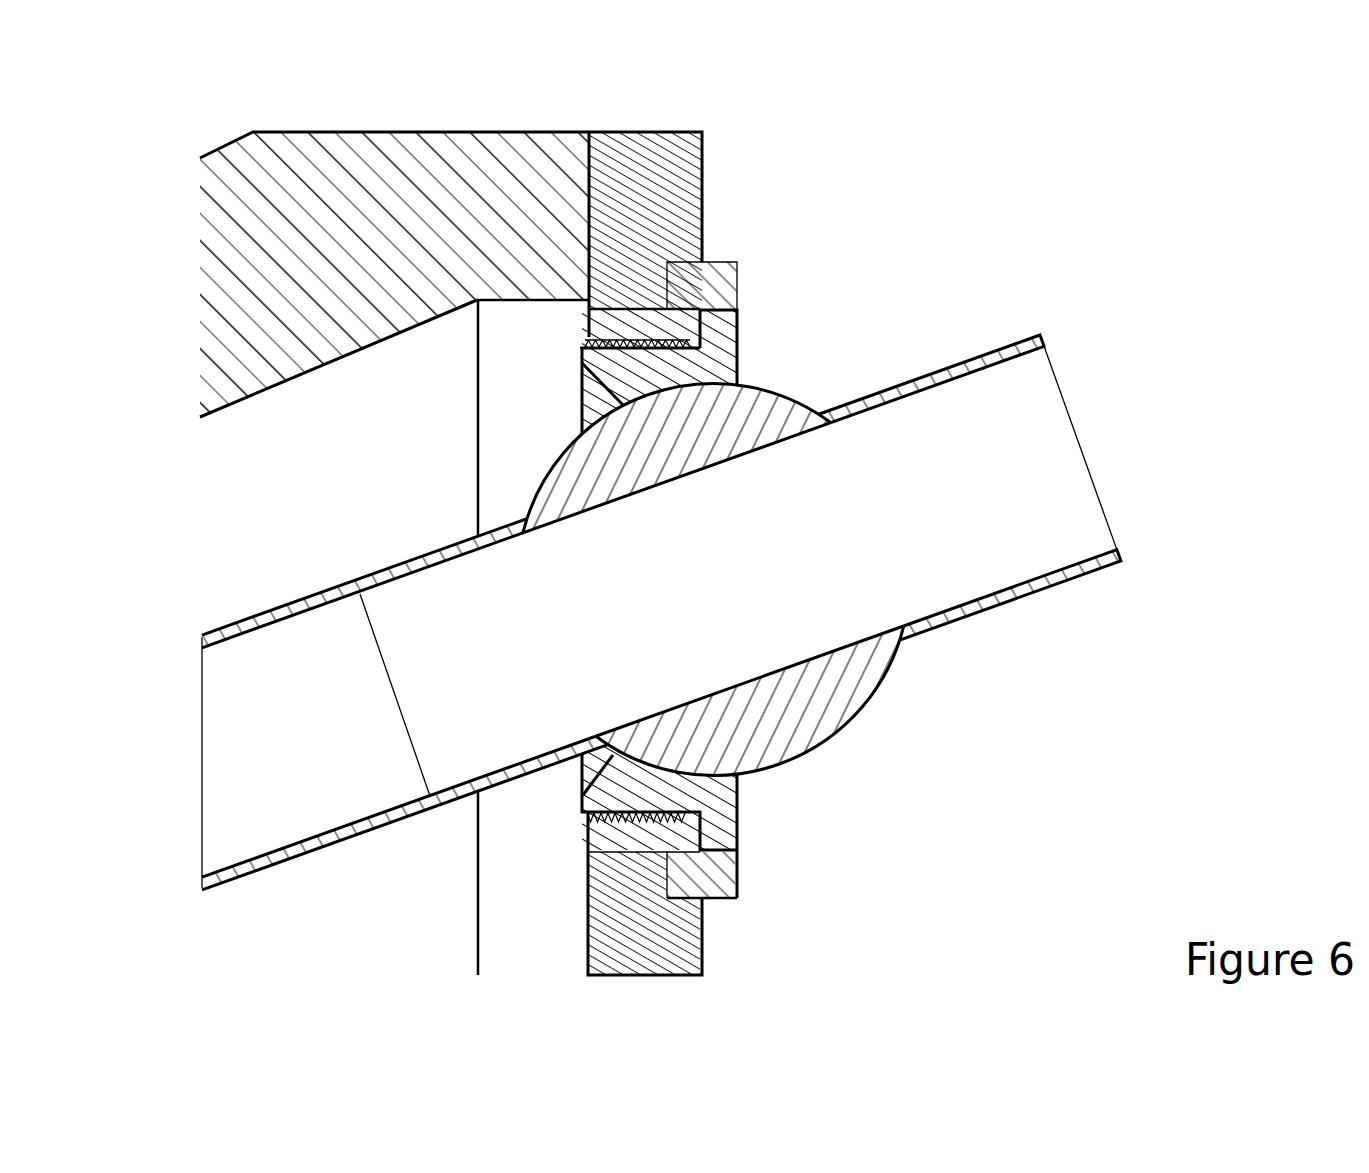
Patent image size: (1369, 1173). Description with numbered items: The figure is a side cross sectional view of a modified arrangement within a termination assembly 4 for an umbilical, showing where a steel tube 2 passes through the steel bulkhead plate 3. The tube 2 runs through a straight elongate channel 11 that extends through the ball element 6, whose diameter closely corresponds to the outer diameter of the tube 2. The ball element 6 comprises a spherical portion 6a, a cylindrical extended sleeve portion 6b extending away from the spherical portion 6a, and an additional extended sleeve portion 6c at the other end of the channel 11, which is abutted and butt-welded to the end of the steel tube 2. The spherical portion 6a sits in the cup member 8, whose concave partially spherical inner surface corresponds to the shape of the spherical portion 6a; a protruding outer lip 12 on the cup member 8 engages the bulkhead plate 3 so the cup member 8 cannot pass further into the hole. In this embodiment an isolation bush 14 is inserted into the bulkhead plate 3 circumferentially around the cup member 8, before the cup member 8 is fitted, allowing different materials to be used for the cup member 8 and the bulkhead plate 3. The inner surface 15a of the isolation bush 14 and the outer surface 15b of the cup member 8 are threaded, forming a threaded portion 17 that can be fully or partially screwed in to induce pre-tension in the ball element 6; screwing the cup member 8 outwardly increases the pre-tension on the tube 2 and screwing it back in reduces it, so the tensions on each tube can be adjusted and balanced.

The steel tube 2 is at (622, 617).
The bulkhead plate 3 is at (675, 187).
The termination assembly 4 is at (178, 116).
The ball element 6 is at (756, 629).
The spherical portion 6a is at (770, 733).
The extended sleeve portion 6b is at (958, 363).
The additional extended sleeve portion 6c is at (390, 576).
The cup member 8 is at (720, 817).
The channel 11 is at (975, 580).
The lip 12 is at (718, 330).
The isolation bush 14 is at (708, 283).
The inner surface 15a is at (588, 320).
The outer surface 15b is at (622, 345).
The threaded portion 17 is at (579, 343).